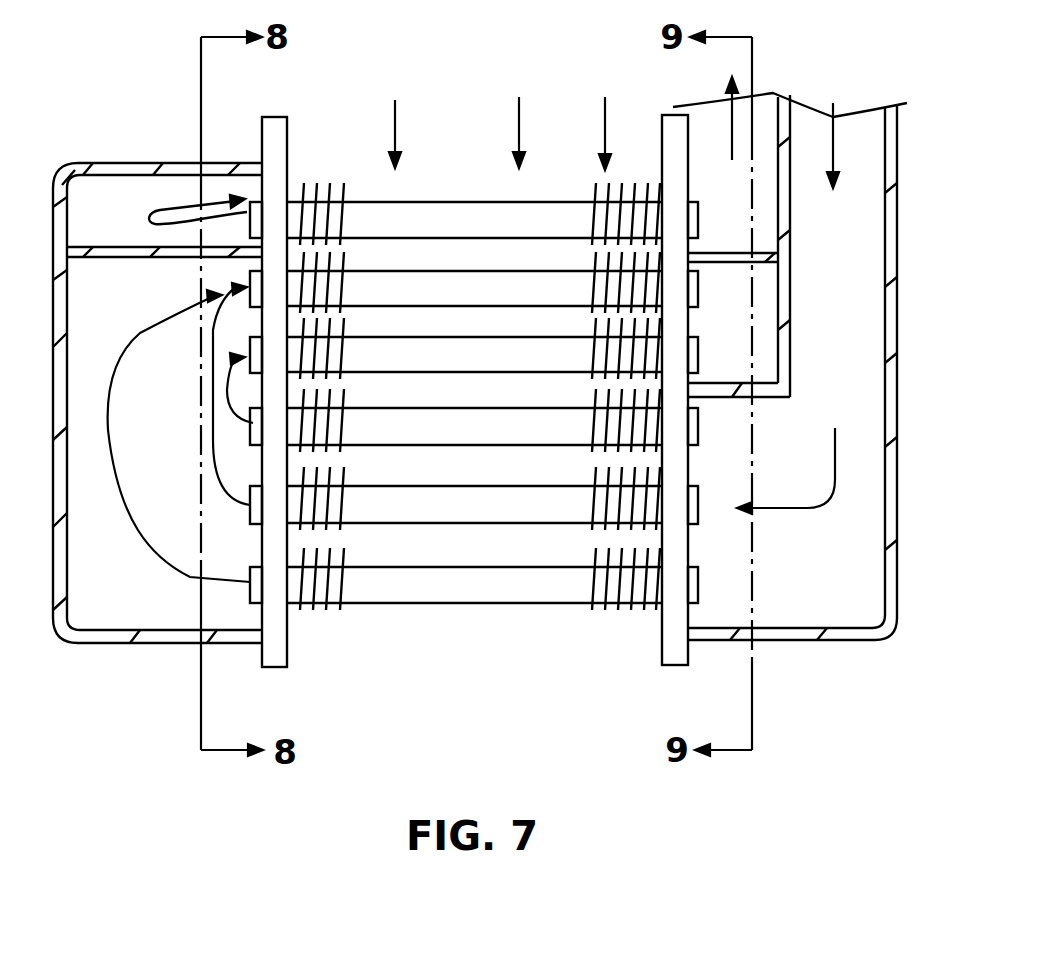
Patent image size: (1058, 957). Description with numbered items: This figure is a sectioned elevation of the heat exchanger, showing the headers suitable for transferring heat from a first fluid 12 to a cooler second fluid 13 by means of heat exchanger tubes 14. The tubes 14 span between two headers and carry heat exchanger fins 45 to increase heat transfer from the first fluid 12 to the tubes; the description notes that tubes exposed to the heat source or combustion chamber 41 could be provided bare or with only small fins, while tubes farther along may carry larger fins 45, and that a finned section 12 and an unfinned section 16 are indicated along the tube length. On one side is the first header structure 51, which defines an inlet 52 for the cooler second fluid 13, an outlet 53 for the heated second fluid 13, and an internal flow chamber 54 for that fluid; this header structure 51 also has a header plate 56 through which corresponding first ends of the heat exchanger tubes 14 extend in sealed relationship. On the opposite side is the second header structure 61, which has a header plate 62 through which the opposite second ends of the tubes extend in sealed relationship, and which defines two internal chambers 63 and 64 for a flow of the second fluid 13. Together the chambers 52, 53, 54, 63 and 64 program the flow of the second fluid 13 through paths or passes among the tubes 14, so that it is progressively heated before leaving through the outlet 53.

The first fluid 12 is at (400, 113).
The second fluid 13 is at (130, 340).
The heat exchanger tubes 14 is at (520, 605).
The unfinned tube section 16 is at (525, 111).
The combustion chamber 41 is at (474, 60).
The heat exchanger fins 45 is at (335, 623).
The first header structure 51 is at (826, 655).
The inlet 52 is at (854, 253).
The outlet 53 is at (710, 143).
The internal flow chamber 54 is at (743, 348).
The header plate 56 is at (672, 647).
The second header structure 61 is at (134, 657).
The header plate 62 is at (287, 127).
The internal chamber 63 is at (151, 615).
The internal chamber 64 is at (134, 227).